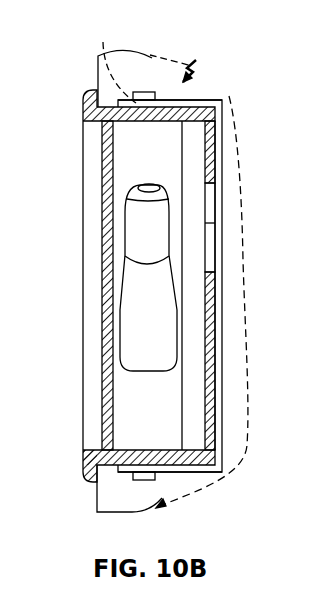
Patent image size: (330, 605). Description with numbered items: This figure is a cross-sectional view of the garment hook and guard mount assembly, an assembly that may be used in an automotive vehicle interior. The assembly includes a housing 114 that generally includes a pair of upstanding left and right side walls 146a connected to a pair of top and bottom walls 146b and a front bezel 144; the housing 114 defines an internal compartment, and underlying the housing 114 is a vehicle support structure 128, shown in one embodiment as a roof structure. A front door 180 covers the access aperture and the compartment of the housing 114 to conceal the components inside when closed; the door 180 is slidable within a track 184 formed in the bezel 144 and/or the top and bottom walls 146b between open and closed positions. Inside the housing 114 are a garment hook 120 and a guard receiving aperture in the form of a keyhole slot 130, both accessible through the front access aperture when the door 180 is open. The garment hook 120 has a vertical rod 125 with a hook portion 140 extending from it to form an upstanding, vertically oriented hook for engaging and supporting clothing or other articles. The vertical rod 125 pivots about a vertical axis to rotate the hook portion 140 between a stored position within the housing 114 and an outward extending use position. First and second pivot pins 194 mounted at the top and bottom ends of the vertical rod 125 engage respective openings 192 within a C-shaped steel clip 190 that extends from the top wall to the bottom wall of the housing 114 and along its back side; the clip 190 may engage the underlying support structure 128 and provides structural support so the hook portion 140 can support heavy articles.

The housing 114 is at (190, 120).
The garment hook 120 is at (98, 176).
The vertical rod 125 is at (165, 167).
The vehicle support structure 128 is at (214, 329).
The keyhole slot 130 is at (212, 239).
The hook portion 140 is at (160, 212).
The front bezel 144 is at (84, 100).
The left and right side walls 146a is at (192, 377).
The top and bottom walls 146b is at (212, 99).
The front door 180 is at (101, 277).
The track 184 is at (100, 121).
The C-shaped steel clip 190 is at (225, 96).
The openings 192 is at (170, 264).
The pivot pins 194 is at (145, 91).